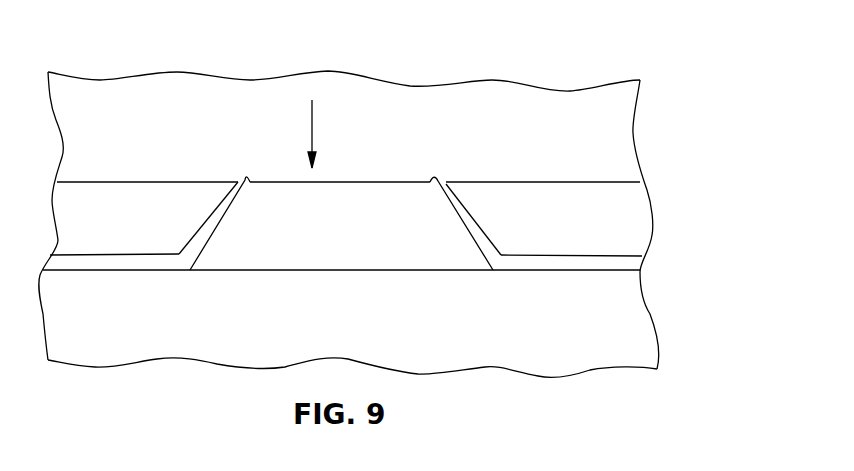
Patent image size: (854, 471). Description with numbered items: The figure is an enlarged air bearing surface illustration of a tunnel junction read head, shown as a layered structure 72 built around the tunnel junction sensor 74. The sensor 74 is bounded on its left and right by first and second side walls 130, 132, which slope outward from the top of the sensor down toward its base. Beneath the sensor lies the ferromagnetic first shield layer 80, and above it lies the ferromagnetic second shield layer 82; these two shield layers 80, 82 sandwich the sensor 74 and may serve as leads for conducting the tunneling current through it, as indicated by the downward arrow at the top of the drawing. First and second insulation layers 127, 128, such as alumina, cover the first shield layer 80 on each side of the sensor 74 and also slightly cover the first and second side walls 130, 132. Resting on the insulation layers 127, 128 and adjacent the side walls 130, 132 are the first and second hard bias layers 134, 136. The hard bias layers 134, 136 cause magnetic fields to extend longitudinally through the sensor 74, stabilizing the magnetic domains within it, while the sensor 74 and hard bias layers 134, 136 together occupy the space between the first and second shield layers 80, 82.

The magnetic read head structure 72 is at (140, 58).
The tunnel junction sensor 74 is at (395, 182).
The first shield layer 80 is at (155, 347).
The second shield layer 82 is at (625, 110).
The first insulation layer 127 is at (100, 264).
The second insulation layer 128 is at (572, 263).
The first side wall 130 is at (213, 229).
The second side wall 132 is at (467, 232).
The first hard bias layer 134 is at (130, 192).
The second hard bias layer 136 is at (566, 192).